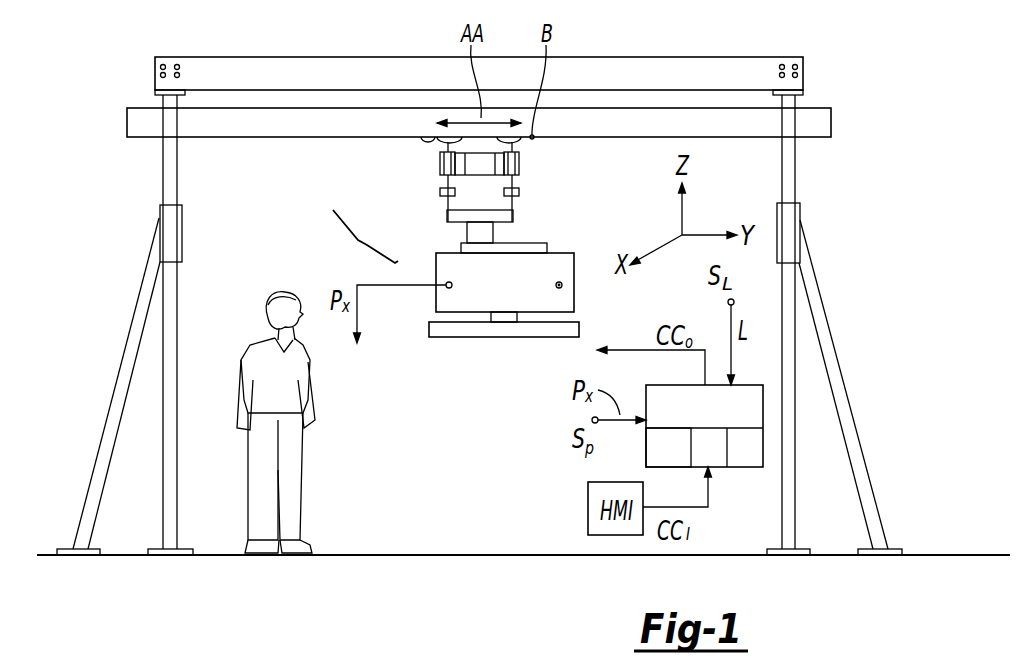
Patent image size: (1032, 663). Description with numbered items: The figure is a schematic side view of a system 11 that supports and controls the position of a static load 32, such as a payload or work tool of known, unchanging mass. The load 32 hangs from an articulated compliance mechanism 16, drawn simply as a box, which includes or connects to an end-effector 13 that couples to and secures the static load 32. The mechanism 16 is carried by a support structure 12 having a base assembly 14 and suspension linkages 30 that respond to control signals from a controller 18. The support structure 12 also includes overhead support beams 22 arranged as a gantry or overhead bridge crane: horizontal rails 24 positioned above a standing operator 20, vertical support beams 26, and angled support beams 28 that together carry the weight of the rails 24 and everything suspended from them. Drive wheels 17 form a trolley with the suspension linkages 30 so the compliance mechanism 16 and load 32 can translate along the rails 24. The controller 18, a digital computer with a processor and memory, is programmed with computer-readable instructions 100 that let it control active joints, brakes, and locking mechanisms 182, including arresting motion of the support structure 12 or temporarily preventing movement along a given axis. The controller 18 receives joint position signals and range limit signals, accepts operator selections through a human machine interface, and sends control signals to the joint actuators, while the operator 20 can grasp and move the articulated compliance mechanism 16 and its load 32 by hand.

The system 11 is at (226, 26).
The overhead support beams 22 is at (100, 57).
The horizontal rails 24 is at (835, 123).
The vertical support beams 26 is at (178, 168).
The angled support beams 28 is at (113, 383).
The drive wheels 17 is at (412, 151).
The suspension linkages 30 is at (532, 193).
The base assembly 14 is at (537, 243).
The articulated compliance mechanism 16 is at (514, 298).
The locking mechanisms 182 is at (563, 285).
The end-effector 13 is at (491, 316).
The static load 32 is at (580, 328).
The support structure 12 is at (365, 242).
The operator 20 is at (264, 278).
The controller 18 is at (737, 419).
The computer-readable instructions 100 is at (680, 461).